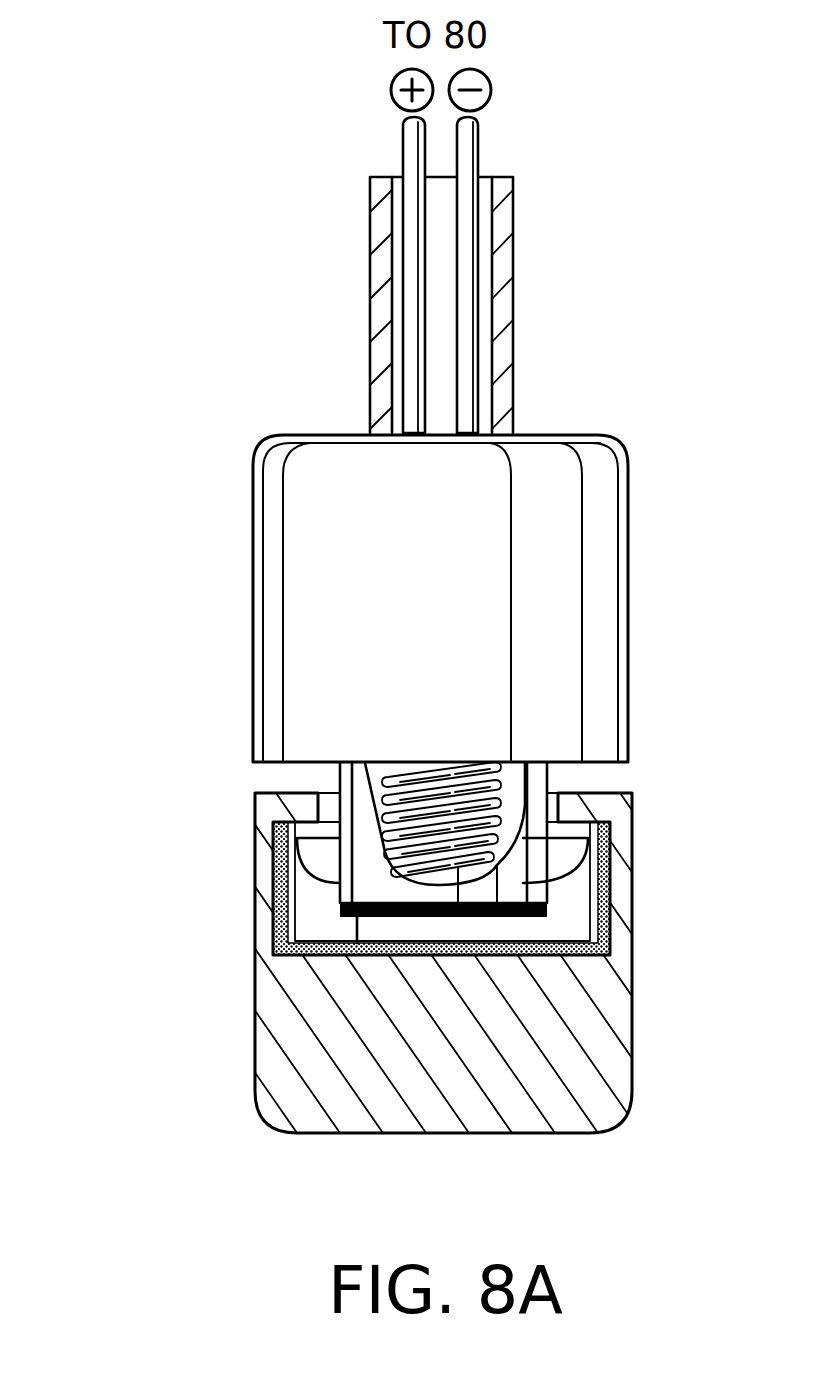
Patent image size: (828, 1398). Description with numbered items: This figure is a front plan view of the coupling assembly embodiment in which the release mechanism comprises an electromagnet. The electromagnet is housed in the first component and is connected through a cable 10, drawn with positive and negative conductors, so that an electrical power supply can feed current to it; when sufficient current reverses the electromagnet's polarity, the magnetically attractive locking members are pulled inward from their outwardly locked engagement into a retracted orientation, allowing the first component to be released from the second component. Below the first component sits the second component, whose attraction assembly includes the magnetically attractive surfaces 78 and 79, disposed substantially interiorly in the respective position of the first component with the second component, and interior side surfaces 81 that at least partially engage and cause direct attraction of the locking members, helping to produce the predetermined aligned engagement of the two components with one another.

The electrical cable 10 is at (513, 315).
The magnetically attractive surface 78 is at (372, 917).
The magnetically attractive surface 79 is at (343, 948).
The interior side surfaces 81 is at (277, 917).